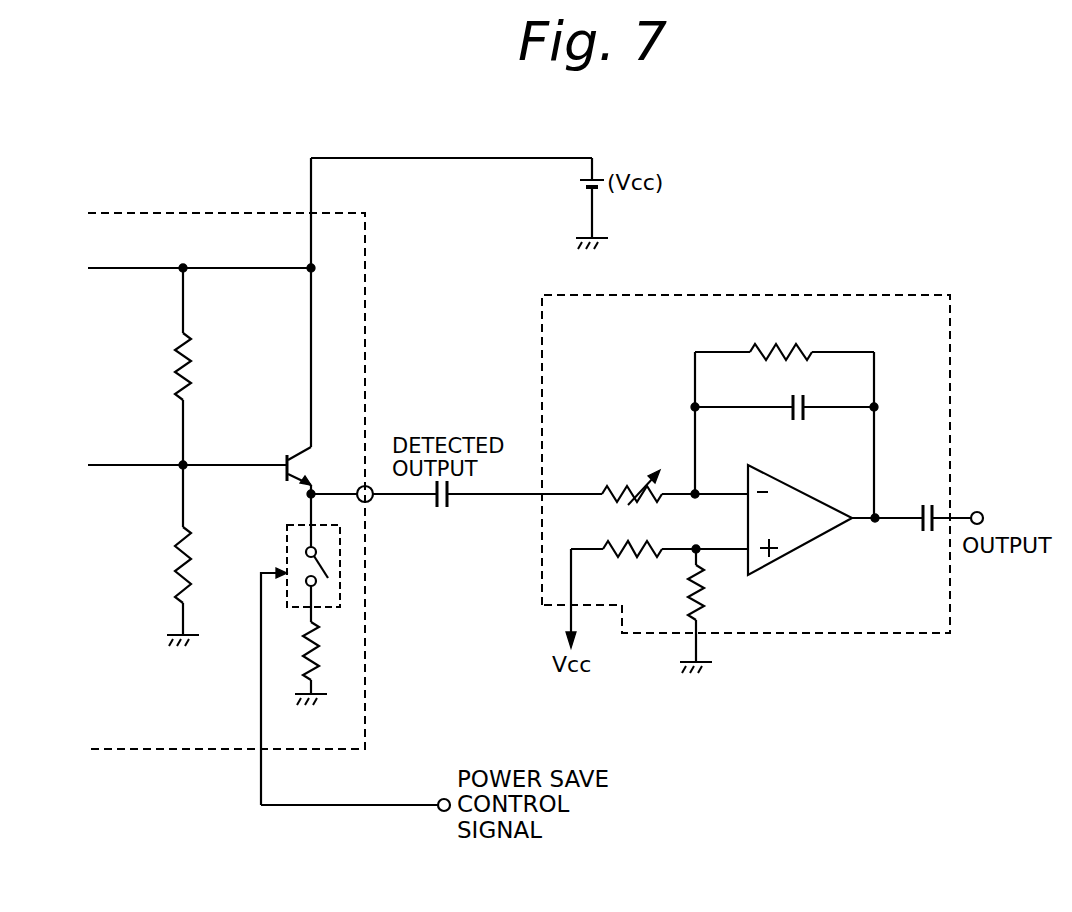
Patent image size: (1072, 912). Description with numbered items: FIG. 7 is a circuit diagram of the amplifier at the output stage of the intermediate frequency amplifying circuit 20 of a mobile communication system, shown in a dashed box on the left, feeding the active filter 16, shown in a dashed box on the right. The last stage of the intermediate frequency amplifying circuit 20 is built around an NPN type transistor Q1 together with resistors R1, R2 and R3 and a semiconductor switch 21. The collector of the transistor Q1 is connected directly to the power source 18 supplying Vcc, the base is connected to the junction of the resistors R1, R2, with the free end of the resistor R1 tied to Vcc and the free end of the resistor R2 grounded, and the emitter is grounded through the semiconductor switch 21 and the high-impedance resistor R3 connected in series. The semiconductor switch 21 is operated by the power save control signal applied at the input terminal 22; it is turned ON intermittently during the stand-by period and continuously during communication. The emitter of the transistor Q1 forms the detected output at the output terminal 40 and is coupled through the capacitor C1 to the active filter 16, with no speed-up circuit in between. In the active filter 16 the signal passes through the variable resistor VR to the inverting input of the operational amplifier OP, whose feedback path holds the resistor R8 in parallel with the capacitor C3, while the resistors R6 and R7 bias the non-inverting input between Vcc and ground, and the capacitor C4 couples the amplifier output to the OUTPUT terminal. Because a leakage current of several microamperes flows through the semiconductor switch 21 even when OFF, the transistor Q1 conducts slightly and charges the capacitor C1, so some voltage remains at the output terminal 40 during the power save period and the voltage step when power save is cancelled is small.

The active filter 16 is at (765, 295).
The power source 18 is at (594, 172).
The intermediate frequency amplifying circuit 20 is at (160, 213).
The semiconductor switch 21 is at (340, 598).
The input terminal 22 is at (441, 799).
The output terminal 40 is at (370, 500).
The resistor R1 is at (200, 366).
The resistor R2 is at (196, 555).
The resistor R3 is at (324, 663).
The resistor R6 is at (632, 568).
The resistor R7 is at (709, 611).
The resistor R8 is at (784, 336).
The NPN type transistor Q1 is at (289, 460).
The capacitor C1 is at (441, 509).
The capacitor C3 is at (784, 423).
The capacitor C4 is at (919, 505).
The variable resistor VR is at (632, 475).
The operational amplifier OP is at (797, 553).